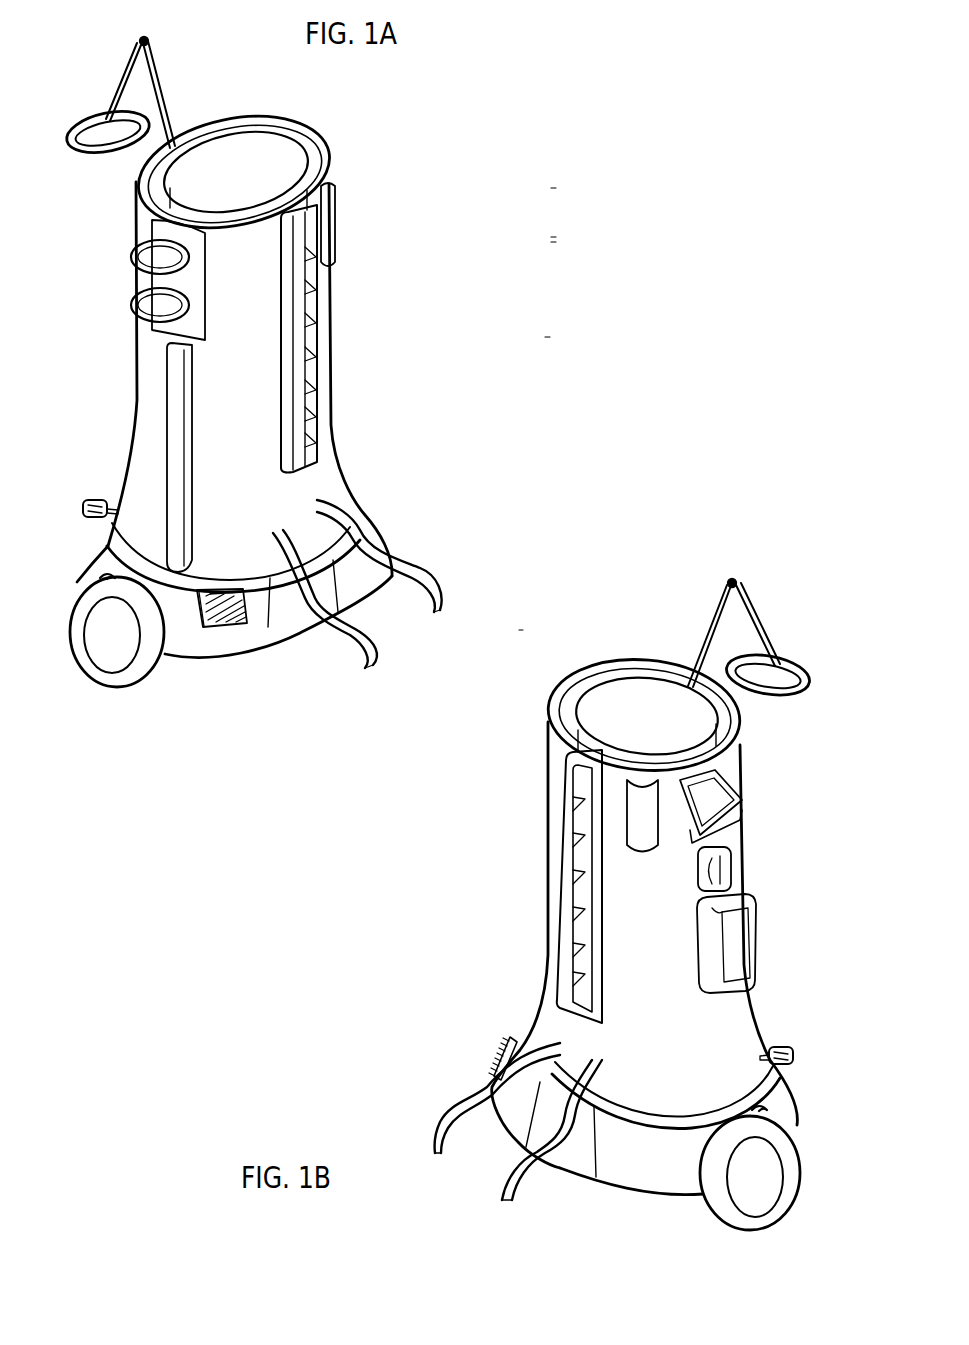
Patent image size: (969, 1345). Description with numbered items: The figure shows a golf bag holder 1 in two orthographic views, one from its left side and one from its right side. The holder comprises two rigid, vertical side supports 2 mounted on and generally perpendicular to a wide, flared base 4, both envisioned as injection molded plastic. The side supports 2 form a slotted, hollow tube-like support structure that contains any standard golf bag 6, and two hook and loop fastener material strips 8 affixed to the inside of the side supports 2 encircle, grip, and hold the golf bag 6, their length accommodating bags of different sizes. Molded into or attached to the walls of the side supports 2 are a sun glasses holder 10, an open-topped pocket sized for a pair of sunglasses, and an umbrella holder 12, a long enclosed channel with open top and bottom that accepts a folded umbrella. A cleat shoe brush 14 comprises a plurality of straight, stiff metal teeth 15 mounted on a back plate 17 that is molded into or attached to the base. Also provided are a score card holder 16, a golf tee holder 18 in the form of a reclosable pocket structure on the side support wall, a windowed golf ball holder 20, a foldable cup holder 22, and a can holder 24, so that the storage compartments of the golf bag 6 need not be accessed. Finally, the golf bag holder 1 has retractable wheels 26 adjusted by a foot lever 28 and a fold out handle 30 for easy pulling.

In FIG. 1A, the golf bag holder 1 is at (455, 297).
In FIG. 1B, the golf bag holder 1 is at (452, 915).
In FIG. 1A, the vertical side supports 2 is at (150, 445).
In FIG. 1B, the vertical side supports 2 is at (735, 1022).
In FIG. 1A, the wide, flared base 4 is at (362, 525).
In FIG. 1B, the wide, flared base 4 is at (642, 1153).
In FIG. 1A, the golf bag 6 is at (322, 146).
In FIG. 1B, the golf bag 6 is at (637, 686).
In FIG. 1A, the hook and loop fastener material strips 8 is at (412, 568).
In FIG. 1B, the hook and loop fastener material strips 8 is at (446, 1108).
In FIG. 1A, the sun glasses holder 10 is at (333, 218).
In FIG. 1B, the sun glasses holder 10 is at (640, 813).
In FIG. 1A, the umbrella holder 12 is at (174, 390).
In FIG. 1A, the cleat shoe brush 14 is at (257, 630).
In FIG. 1B, the cleat shoe brush 14 is at (507, 1047).
In FIG. 1A, the metal teeth 15 is at (238, 628).
In FIG. 1B, the score card holder 16 is at (718, 795).
In FIG. 1A, the back plate 17 is at (201, 628).
In FIG. 1B, the golf tee holder 18 is at (726, 870).
In FIG. 1B, the windowed golf ball holder 20 is at (737, 941).
In FIG. 1A, the foldable cup holder 22 is at (132, 258).
In FIG. 1A, the can holder 24 is at (306, 307).
In FIG. 1B, the can holder 24 is at (575, 888).
In FIG. 1A, the retractable wheels 26 is at (88, 661).
In FIG. 1B, the retractable wheels 26 is at (734, 1216).
In FIG. 1A, the foot lever 28 is at (88, 517).
In FIG. 1B, the foot lever 28 is at (787, 1054).
In FIG. 1A, the fold out handle 30 is at (95, 114).
In FIG. 1B, the fold out handle 30 is at (782, 666).